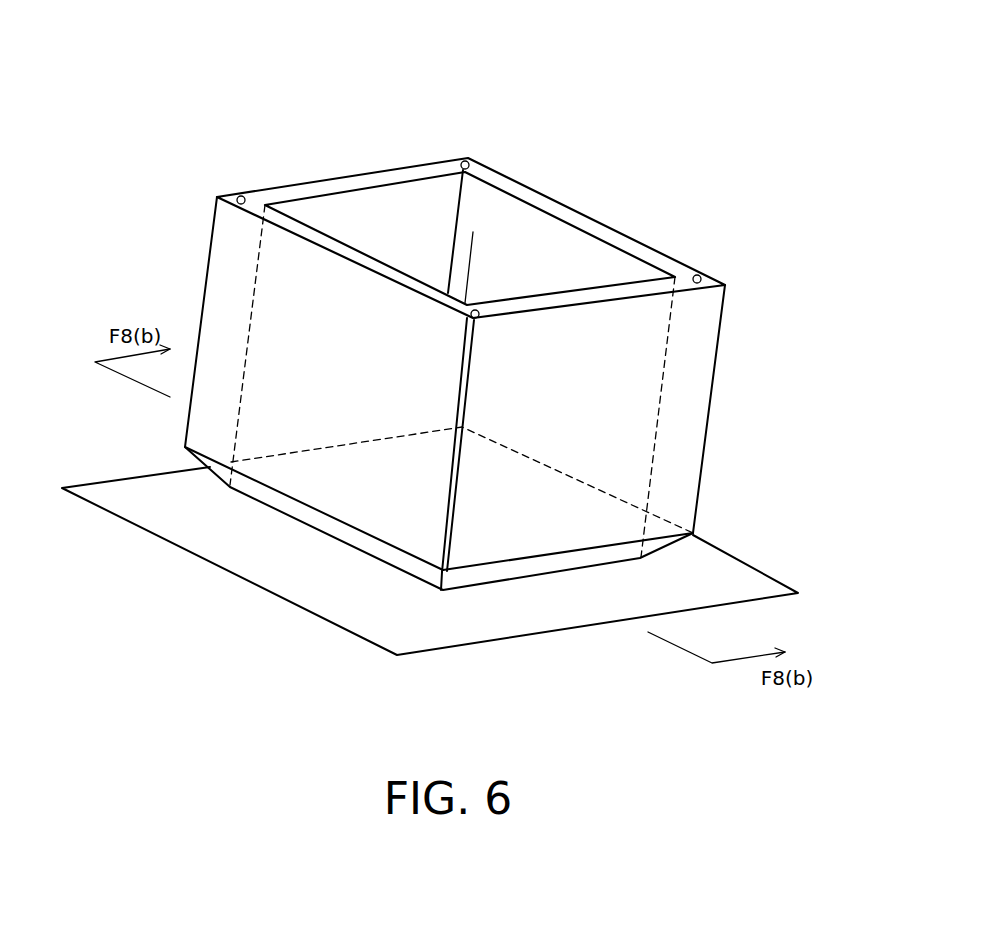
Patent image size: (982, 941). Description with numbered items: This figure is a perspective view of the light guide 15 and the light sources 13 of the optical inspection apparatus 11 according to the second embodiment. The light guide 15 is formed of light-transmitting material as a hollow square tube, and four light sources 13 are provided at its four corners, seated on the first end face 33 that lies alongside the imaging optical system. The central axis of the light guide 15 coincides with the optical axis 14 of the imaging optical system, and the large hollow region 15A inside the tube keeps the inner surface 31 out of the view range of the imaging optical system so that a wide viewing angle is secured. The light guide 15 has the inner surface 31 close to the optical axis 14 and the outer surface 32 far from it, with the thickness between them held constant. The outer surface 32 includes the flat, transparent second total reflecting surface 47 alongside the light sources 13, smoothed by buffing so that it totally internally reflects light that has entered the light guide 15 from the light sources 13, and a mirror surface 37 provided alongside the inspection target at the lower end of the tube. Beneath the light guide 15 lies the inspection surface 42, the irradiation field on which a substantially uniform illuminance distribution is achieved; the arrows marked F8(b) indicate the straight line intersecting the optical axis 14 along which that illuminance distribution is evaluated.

The optical inspection apparatus 11 is at (490, 97).
The light source 13 is at (241, 196).
The optical axis 14 is at (452, 397).
The light guide 15 is at (732, 290).
The hollow region 15A is at (572, 256).
The inner surface 31 is at (415, 212).
The outer surface 32 is at (300, 322).
The first end face 33 is at (357, 180).
The mirror surface 37 is at (333, 530).
The inspection surface 42 is at (450, 652).
The second total reflecting surface 47 is at (201, 322).